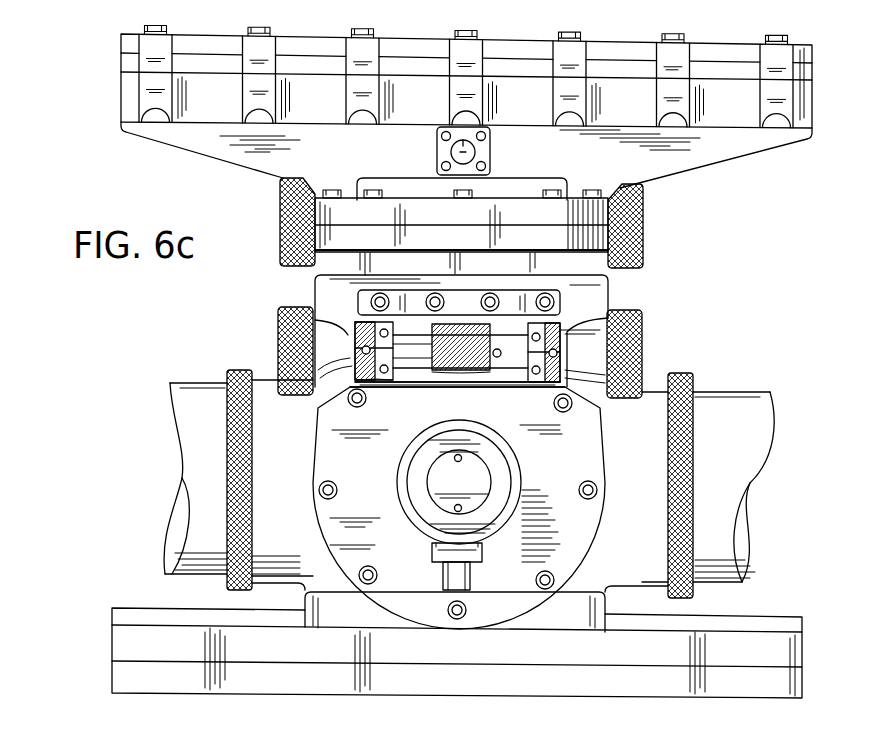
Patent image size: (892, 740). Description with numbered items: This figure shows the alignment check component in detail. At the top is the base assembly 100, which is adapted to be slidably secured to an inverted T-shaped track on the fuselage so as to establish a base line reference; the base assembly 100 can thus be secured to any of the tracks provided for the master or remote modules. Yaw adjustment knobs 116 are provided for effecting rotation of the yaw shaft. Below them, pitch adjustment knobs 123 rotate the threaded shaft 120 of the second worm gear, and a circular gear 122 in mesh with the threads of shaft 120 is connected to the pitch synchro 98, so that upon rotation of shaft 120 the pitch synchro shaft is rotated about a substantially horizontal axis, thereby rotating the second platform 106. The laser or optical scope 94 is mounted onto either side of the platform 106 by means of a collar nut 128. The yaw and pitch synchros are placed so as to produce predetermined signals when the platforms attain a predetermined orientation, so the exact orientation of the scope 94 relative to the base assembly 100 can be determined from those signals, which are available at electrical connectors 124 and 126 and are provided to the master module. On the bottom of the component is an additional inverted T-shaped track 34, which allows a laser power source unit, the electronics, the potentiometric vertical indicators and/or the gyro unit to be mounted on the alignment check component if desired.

The base assembly 100 is at (122, 74).
The electrical connector 124 is at (437, 152).
The yaw adjustment knobs 116 is at (280, 215).
The pitch adjustment knobs 123 is at (278, 336).
The threaded shaft 120 is at (434, 338).
The circular gear 122 is at (431, 381).
The second platform 106 is at (652, 482).
The pitch synchro 98 is at (459, 482).
The electrical connector 126 is at (444, 584).
The laser or optical scope 94 is at (730, 392).
The collar nut 128 is at (682, 372).
The inverted T-shaped track 34 is at (112, 652).